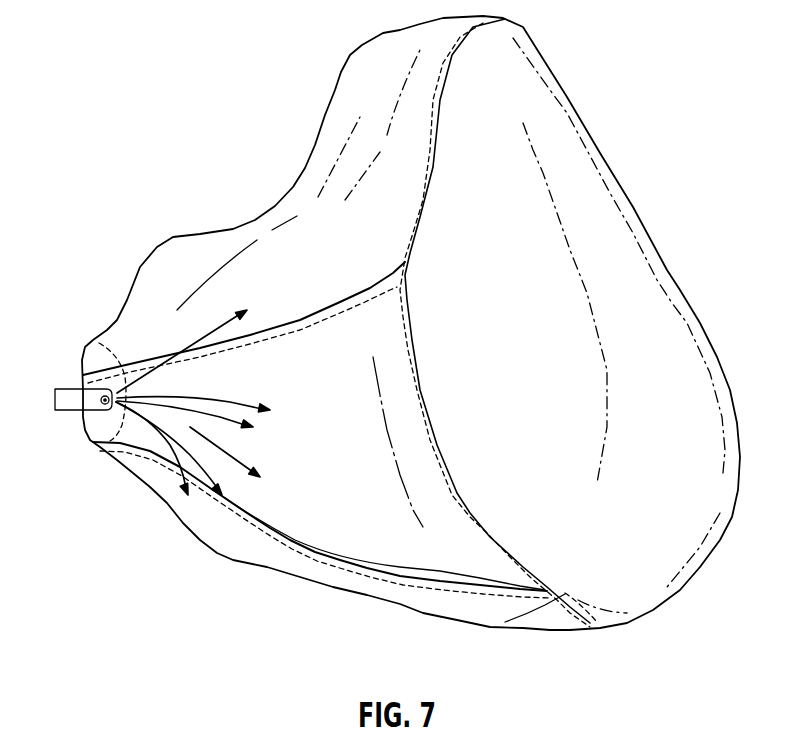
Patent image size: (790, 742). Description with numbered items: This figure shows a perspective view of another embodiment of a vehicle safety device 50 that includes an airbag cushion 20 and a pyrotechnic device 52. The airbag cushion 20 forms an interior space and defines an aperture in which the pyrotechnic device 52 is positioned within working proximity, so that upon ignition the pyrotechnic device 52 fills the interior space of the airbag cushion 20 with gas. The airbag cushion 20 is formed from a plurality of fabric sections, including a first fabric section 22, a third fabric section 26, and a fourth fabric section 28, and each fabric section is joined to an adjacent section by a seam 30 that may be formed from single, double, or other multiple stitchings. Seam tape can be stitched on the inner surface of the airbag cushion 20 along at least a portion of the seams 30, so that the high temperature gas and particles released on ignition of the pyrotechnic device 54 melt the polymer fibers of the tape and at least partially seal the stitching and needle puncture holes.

The vehicle safety device 50 is at (104, 40).
The airbag cushion 20 is at (342, 77).
The first fabric section 22 is at (662, 290).
The third fabric section 26 is at (330, 190).
The fourth fabric section 28 is at (510, 612).
The seam 30 is at (425, 252).
The pyrotechnic device 52 is at (66, 405).
The pyrotechnic device 54 is at (95, 448).